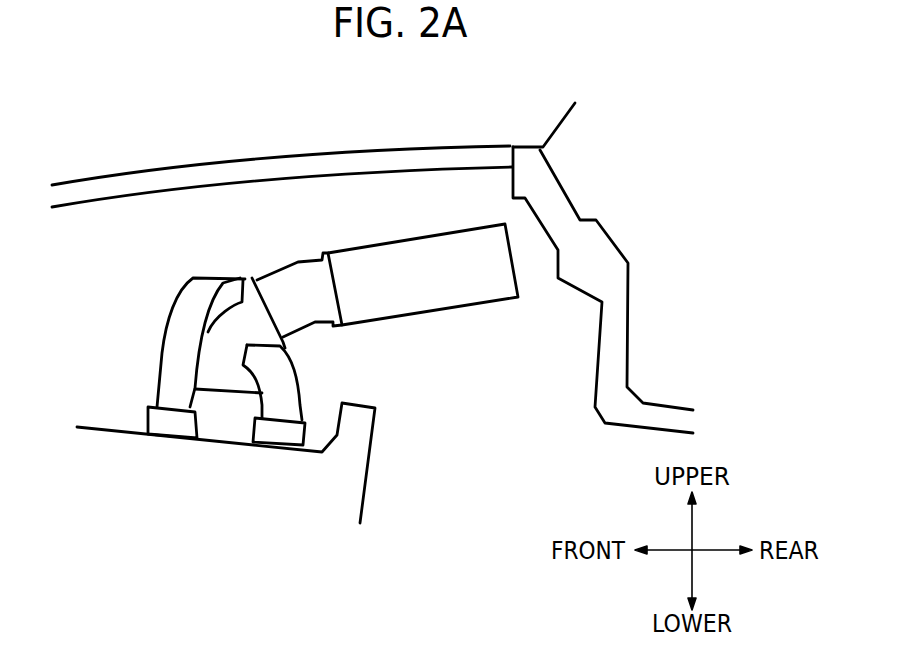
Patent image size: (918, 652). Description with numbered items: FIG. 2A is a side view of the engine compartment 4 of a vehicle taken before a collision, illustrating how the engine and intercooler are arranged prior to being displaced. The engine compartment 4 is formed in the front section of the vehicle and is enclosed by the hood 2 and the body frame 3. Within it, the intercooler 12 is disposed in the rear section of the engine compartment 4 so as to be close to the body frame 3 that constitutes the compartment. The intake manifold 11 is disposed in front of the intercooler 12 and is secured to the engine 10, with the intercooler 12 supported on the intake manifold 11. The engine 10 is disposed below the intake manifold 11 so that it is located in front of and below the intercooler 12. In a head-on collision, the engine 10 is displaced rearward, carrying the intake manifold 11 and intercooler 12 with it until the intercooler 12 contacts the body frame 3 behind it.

The hood 2 is at (173, 163).
The engine compartment 4 is at (246, 216).
The body frame 3 is at (512, 147).
The engine 10 is at (367, 497).
The intake manifold 11 is at (167, 303).
The intercooler 12 is at (415, 238).